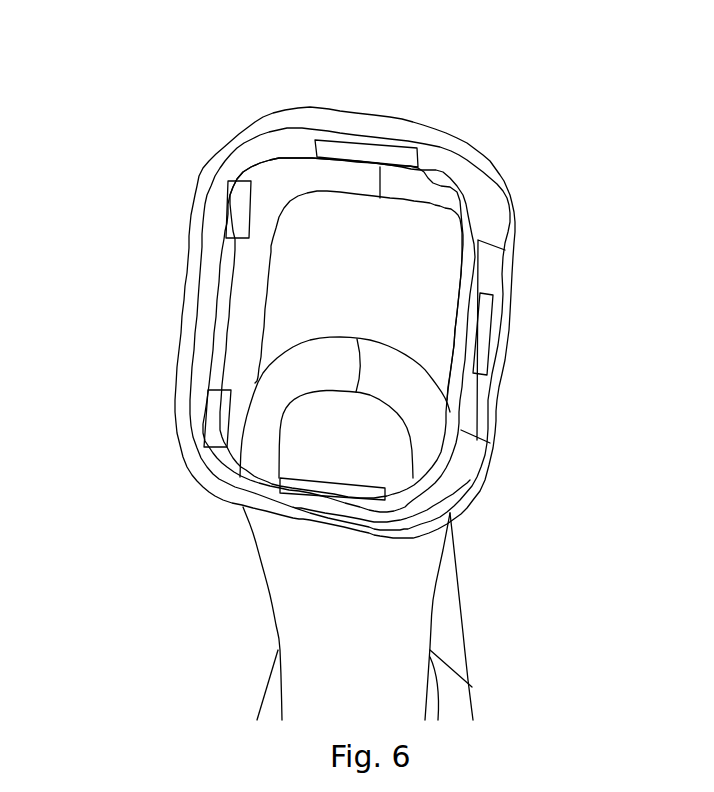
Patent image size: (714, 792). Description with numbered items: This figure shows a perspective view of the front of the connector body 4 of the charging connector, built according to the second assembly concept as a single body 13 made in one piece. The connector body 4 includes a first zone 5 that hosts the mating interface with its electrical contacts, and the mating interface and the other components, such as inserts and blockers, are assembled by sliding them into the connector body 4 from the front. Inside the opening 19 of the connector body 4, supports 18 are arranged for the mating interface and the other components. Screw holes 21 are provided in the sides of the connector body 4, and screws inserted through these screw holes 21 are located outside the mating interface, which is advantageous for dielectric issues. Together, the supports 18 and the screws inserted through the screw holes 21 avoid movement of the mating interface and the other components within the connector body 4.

The connector body 4 is at (484, 650).
The first zone 5 is at (502, 233).
The single body 13 is at (497, 395).
The supports 18 is at (367, 148).
The opening 19 is at (288, 303).
The screw holes 21 is at (488, 313).